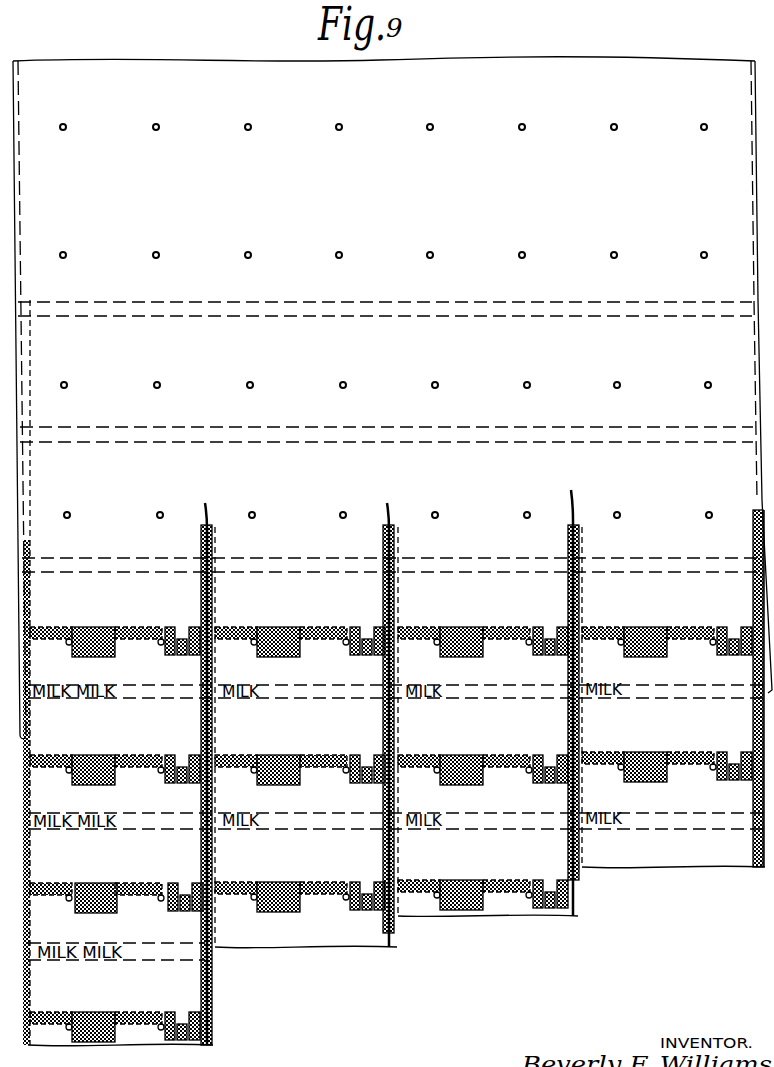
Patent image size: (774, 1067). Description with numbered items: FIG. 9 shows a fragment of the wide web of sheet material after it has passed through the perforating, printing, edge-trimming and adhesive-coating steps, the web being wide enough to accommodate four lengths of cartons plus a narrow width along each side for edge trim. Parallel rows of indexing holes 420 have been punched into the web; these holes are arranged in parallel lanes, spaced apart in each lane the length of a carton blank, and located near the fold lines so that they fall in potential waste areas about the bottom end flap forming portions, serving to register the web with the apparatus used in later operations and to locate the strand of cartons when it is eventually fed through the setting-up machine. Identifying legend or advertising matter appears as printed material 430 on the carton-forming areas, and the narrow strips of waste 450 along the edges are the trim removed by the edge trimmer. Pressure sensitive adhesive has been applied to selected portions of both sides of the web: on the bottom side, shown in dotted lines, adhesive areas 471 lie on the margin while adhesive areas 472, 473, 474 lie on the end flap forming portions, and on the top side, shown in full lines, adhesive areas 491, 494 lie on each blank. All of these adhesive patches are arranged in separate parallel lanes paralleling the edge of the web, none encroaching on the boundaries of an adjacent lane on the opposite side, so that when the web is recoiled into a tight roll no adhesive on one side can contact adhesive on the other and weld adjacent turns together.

The indexing holes 420 is at (336, 129).
The printed material 430 is at (98, 319).
The waste 450 is at (28, 716).
The adhesive areas 471 is at (215, 727).
The adhesive areas 472 is at (238, 753).
The adhesive areas 473 is at (330, 753).
The adhesive areas 474 is at (189, 908).
The adhesive areas 491 is at (97, 881).
The adhesive areas 494 is at (207, 966).